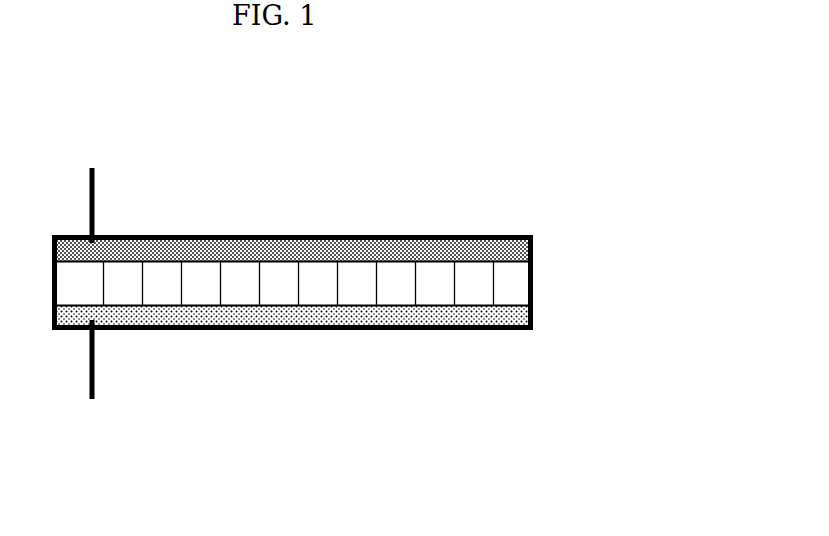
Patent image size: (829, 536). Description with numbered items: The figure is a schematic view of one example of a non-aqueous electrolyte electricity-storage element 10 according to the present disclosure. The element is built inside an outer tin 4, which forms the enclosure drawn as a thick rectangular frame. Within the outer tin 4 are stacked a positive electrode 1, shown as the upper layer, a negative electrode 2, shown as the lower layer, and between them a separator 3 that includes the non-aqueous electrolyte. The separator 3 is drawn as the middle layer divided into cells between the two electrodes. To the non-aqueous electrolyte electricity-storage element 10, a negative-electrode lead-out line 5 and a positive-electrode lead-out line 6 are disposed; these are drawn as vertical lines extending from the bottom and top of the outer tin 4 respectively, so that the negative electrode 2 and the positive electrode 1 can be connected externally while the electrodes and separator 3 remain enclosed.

The non-aqueous electrolyte electricity-storage element 10 is at (535, 210).
The positive electrode 1 is at (402, 236).
The negative electrode 2 is at (405, 317).
The separator 3 is at (514, 283).
The outer tin 4 is at (512, 331).
The negative-electrode lead-out line 5 is at (95, 373).
The positive-electrode lead-out line 6 is at (95, 191).